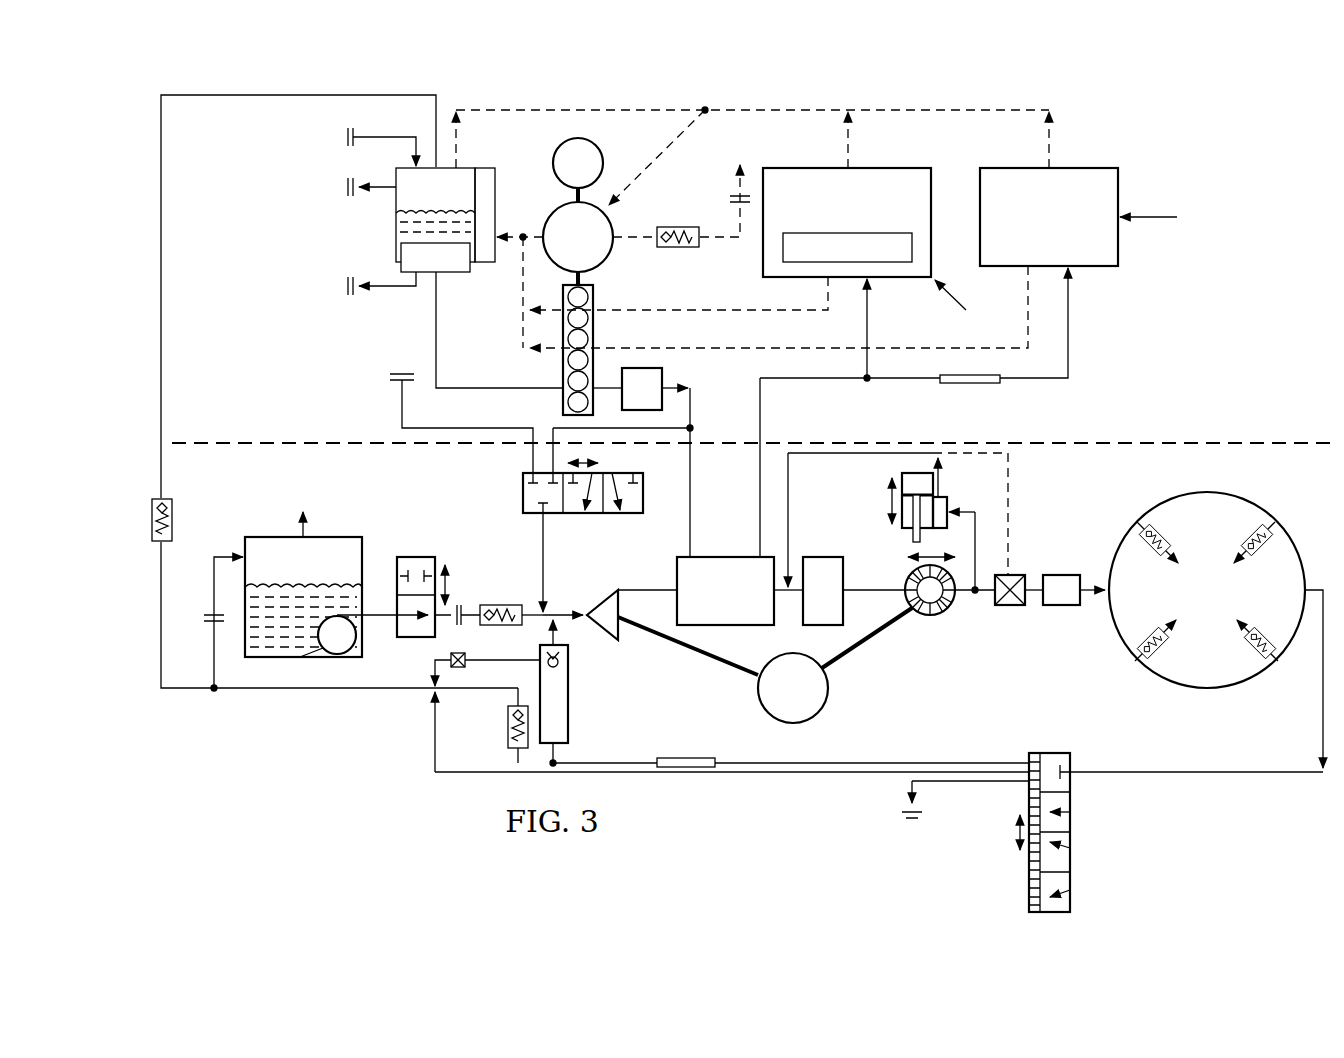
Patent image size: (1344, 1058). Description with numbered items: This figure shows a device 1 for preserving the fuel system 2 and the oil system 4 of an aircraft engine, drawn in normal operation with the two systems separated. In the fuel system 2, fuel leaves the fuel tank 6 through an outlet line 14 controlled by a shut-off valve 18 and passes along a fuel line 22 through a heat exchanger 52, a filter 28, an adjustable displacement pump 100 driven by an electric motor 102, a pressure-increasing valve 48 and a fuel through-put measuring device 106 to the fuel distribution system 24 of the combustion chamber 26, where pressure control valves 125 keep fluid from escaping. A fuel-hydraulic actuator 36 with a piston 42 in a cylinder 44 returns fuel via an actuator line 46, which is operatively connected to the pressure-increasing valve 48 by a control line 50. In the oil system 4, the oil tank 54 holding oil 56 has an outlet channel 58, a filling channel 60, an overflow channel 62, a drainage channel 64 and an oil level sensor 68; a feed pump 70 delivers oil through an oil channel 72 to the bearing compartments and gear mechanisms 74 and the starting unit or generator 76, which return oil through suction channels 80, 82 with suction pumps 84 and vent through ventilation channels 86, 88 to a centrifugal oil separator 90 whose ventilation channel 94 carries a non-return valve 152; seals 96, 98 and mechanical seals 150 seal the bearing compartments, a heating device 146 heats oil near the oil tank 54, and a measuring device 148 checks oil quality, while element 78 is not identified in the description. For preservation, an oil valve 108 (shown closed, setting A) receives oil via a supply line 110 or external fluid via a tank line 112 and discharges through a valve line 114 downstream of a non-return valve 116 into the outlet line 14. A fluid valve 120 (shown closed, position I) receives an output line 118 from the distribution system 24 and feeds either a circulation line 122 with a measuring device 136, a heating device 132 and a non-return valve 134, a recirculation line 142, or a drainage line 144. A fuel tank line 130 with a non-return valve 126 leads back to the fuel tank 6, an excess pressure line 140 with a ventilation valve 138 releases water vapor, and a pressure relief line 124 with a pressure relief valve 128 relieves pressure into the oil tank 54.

The device 1 is at (1290, 128).
The fuel system 2 is at (218, 480).
The oil system 4 is at (218, 196).
The fuel tank 6 is at (277, 539).
The outlet line 14 is at (564, 607).
The shut-off valve 18 is at (417, 557).
The fuel line 22 is at (638, 589).
The fuel distribution system 24 is at (1196, 689).
The combustion chamber 26 is at (1195, 602).
The filter 28 is at (822, 557).
The fuel-hydraulic actuator 36 is at (902, 480).
The piston 42 is at (920, 488).
The cylinder 44 is at (915, 541).
The actuator line 46 is at (790, 500).
The pressure-increasing valve 48 is at (1009, 606).
The control line 50 is at (1010, 502).
The heat exchanger 52 is at (726, 557).
The oil tank 54 is at (396, 176).
The oil 56 is at (396, 228).
The outlet channel 58 is at (436, 368).
The filling channel 60 is at (350, 130).
The overflow channel 62 is at (357, 195).
The drainage channel 64 is at (390, 294).
The oil level sensor 68 is at (485, 173).
The feed pump 70 is at (561, 401).
The oil channel 72 is at (692, 495).
The bearing compartments and gear mechanisms 74 is at (802, 166).
The starting unit or generator 76 is at (1037, 229).
The exhaust sensor 78 is at (666, 383).
The suction channel 80 is at (672, 309).
The suction channel 82 is at (990, 348).
The suction pump 84 is at (562, 358).
The ventilation channel 86 is at (852, 142).
The ventilation channel 88 is at (1052, 142).
The centrifugal oil separator 90 is at (555, 220).
The ventilation channel 94 is at (730, 240).
The seal 96 is at (950, 306).
The seal 98 is at (1150, 217).
The adjustable displacement pump 100 is at (936, 615).
The electric motor 102 is at (602, 151).
The fuel through-put measuring device 106 is at (1060, 606).
The directional valve 108 is at (522, 494).
The supply line 110 is at (693, 428).
The tank line 112 is at (400, 402).
The valve line 114 is at (541, 545).
The non-return valve 116 is at (496, 602).
The output line 118 is at (1205, 775).
The directional valve 120 is at (1047, 752).
The circulation line 122 is at (950, 762).
The pressure relief line 124 is at (165, 325).
The pressure control valves 125 is at (1238, 525).
The non-return valve 126 is at (502, 728).
The pressure relief valve 128 is at (174, 515).
The fuel tank line 130 is at (298, 690).
The heating device 132 is at (569, 695).
The non-return valve 134 is at (575, 661).
The measuring device 136 is at (687, 755).
The ventilation valve 138 is at (450, 654).
The excess pressure line 140 is at (432, 688).
The recirculation line 142 is at (750, 775).
The drainage line 144 is at (952, 785).
The heating device 146 is at (455, 267).
The measuring device 148 is at (968, 387).
The mechanical seals 150 is at (845, 232).
The non-return valve 152 is at (679, 226).